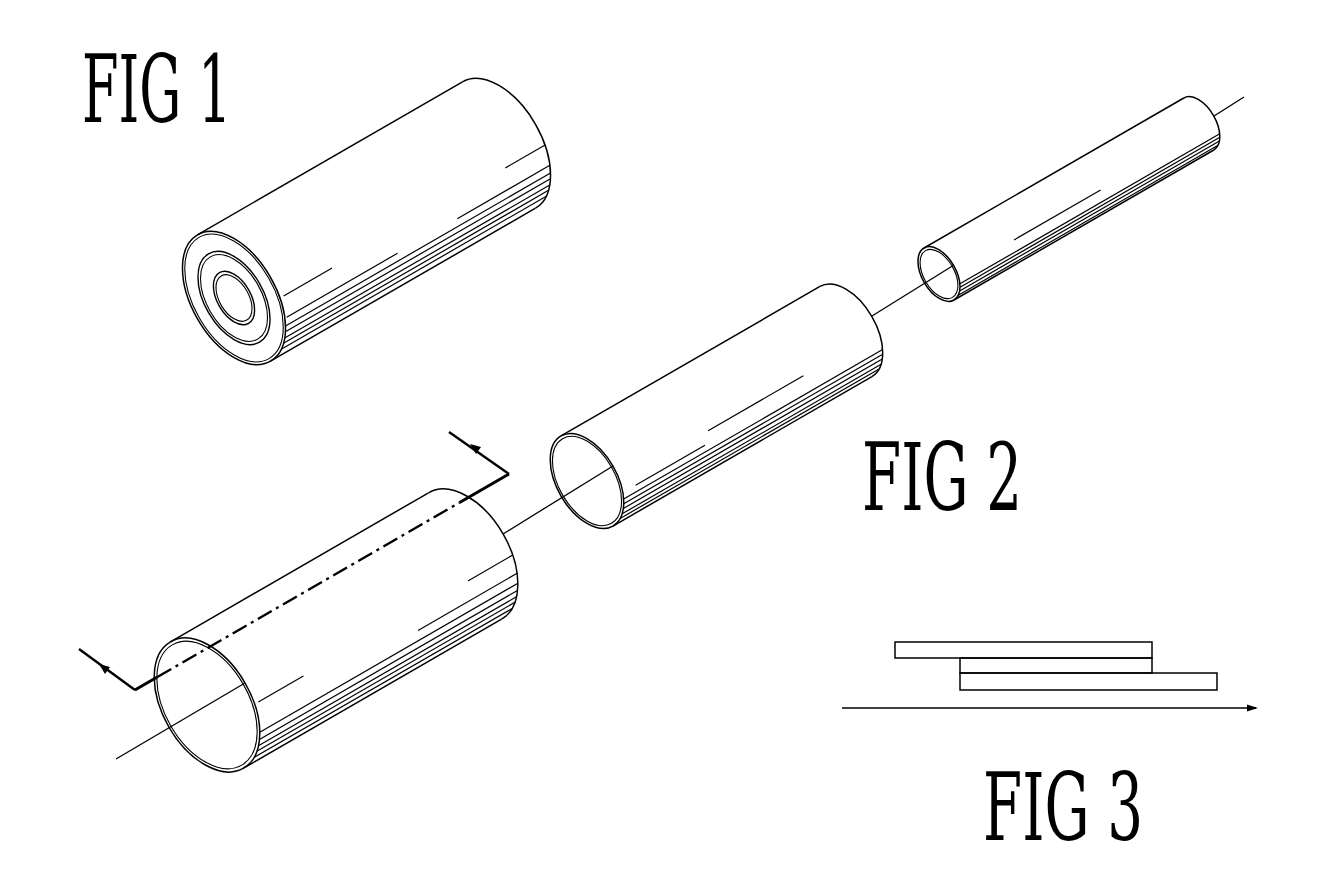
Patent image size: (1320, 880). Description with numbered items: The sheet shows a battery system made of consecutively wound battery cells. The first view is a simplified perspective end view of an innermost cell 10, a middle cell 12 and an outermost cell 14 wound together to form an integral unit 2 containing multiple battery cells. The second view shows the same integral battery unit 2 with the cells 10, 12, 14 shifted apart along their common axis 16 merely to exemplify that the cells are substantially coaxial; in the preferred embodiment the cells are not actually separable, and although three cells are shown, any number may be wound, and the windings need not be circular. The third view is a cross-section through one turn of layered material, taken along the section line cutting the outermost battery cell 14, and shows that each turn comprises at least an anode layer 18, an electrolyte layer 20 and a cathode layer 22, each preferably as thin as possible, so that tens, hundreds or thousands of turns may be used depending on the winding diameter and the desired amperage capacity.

In FIG. 1, the integral unit 2 is at (342, 117).
In FIG. 1, the innermost cell 10 is at (217, 303).
In FIG. 2, the innermost cell 10 is at (1122, 173).
In FIG. 1, the middle cell 12 is at (220, 342).
In FIG. 2, the middle cell 12 is at (703, 452).
In FIG. 1, the outermost cell 14 is at (252, 358).
In FIG. 2, the outermost cell 14 is at (355, 659).
In FIG. 2, the common axis 16 is at (149, 737).
In FIG. 3, the common axis 16 is at (872, 708).
In FIG. 3, the anode layer 18 is at (975, 646).
In FIG. 3, the electrolyte layer 20 is at (1140, 663).
In FIG. 3, the cathode layer 22 is at (1207, 685).